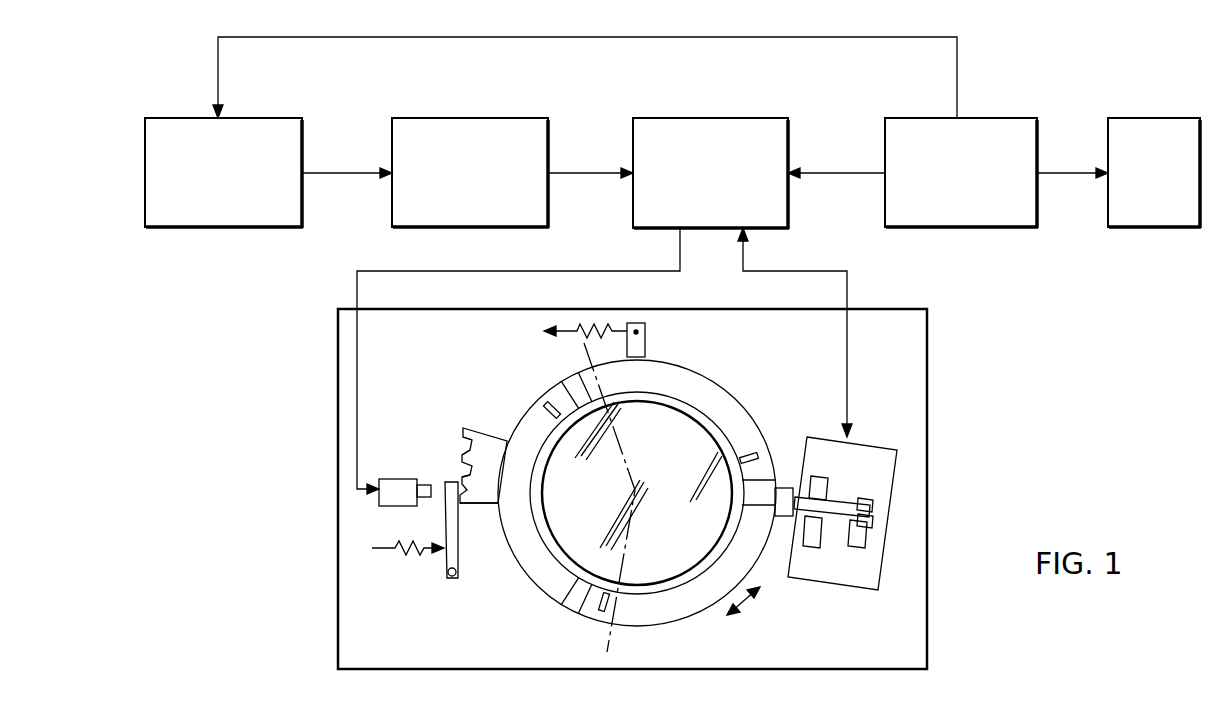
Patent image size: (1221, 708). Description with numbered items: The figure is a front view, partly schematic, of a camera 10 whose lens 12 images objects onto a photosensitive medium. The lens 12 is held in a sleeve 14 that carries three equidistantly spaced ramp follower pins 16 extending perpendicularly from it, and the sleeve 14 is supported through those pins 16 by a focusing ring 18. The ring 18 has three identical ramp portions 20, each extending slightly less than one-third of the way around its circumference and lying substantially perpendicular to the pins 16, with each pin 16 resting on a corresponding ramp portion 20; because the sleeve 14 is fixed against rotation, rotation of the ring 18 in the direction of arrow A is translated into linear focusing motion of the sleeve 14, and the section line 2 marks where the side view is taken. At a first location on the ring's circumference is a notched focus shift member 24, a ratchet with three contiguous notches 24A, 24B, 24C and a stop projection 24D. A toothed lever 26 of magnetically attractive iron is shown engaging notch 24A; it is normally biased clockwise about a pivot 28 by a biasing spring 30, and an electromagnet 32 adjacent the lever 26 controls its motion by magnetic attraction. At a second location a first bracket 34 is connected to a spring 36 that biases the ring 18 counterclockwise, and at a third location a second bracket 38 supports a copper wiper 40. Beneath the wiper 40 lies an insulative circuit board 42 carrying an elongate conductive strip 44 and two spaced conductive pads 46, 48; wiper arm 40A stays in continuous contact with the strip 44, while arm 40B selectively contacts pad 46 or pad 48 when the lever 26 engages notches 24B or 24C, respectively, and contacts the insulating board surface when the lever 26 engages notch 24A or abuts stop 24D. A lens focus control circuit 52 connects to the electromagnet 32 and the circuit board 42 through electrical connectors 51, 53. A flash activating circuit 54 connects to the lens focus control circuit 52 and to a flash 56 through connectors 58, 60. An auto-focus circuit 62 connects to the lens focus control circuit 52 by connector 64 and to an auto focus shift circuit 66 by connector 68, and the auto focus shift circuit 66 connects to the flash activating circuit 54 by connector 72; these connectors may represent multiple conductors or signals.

The camera 10 is at (158, 61).
The lens 12 is at (677, 527).
The sleeve 14 is at (704, 392).
The ramp follower pins 16 is at (540, 403).
The focusing ring 18 is at (750, 392).
The ramp portions 20 is at (548, 390).
The section line 2- 2 is at (584, 343).
The focus shift member 24 is at (460, 420).
The notch 24A is at (472, 508).
The notch 24B is at (466, 478).
The notch 24C is at (465, 456).
The stop projection 24D is at (463, 436).
The toothed lever 26 is at (445, 534).
The pivot 28 is at (450, 578).
The biasing spring 30 is at (396, 556).
The electromagnet 32 is at (388, 501).
The first bracket 34 is at (645, 336).
The spring 36 is at (597, 322).
The second bracket 38 is at (782, 512).
The wiper 40 is at (840, 502).
The arm 40A is at (808, 542).
The arm 40B is at (860, 548).
The circuit board 42 is at (876, 436).
The electrically conductive strip 44 is at (818, 478).
The electrically conductive pad 46 is at (872, 526).
The electrically conductive pad 48 is at (870, 500).
The electrical connector 51 is at (546, 272).
The lens focus control circuit 52 is at (722, 120).
The electrical connector 53 is at (846, 288).
The flash activating circuit 54 is at (996, 120).
The flash 56 is at (1138, 120).
The electrical connector 58 is at (830, 176).
The electrical connector 60 is at (1064, 177).
The auto-focus circuit 62 is at (486, 118).
The electrical connector 64 is at (582, 177).
The auto focus shift circuit 66 is at (266, 118).
The electrical connector 68 is at (336, 176).
The electrical connector 72 is at (362, 38).
The arrow A is at (744, 602).